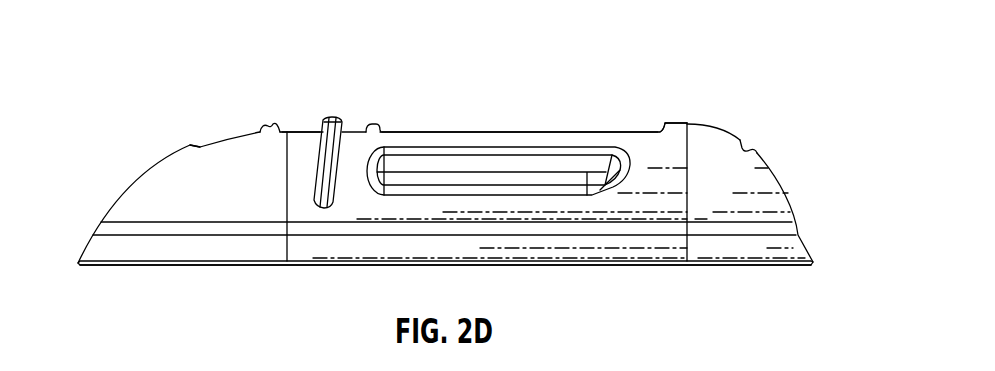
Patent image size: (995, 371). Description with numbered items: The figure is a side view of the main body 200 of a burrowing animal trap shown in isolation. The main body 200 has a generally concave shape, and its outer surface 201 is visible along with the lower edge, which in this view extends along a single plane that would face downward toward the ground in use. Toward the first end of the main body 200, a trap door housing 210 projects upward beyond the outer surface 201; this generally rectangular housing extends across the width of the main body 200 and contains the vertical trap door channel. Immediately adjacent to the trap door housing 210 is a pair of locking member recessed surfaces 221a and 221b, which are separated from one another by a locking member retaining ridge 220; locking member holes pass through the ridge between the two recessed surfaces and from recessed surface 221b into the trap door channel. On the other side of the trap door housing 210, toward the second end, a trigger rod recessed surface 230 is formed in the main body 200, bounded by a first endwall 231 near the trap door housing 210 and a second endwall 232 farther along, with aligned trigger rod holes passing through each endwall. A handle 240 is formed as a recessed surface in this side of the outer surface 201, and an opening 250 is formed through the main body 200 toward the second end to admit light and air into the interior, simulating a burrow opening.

The main body 200 is at (806, 89).
The outer surface 201 is at (148, 197).
The trap door housing 210 is at (337, 117).
The locking member retaining ridge 220 is at (270, 124).
The locking member recessed surface 221a is at (218, 144).
The locking member recessed surface 221b is at (300, 132).
The trigger rod recessed surface 230 is at (475, 132).
The first endwall 231 is at (380, 128).
The second endwall 232 is at (663, 127).
The handle 240 is at (527, 177).
The opening 250 is at (747, 147).